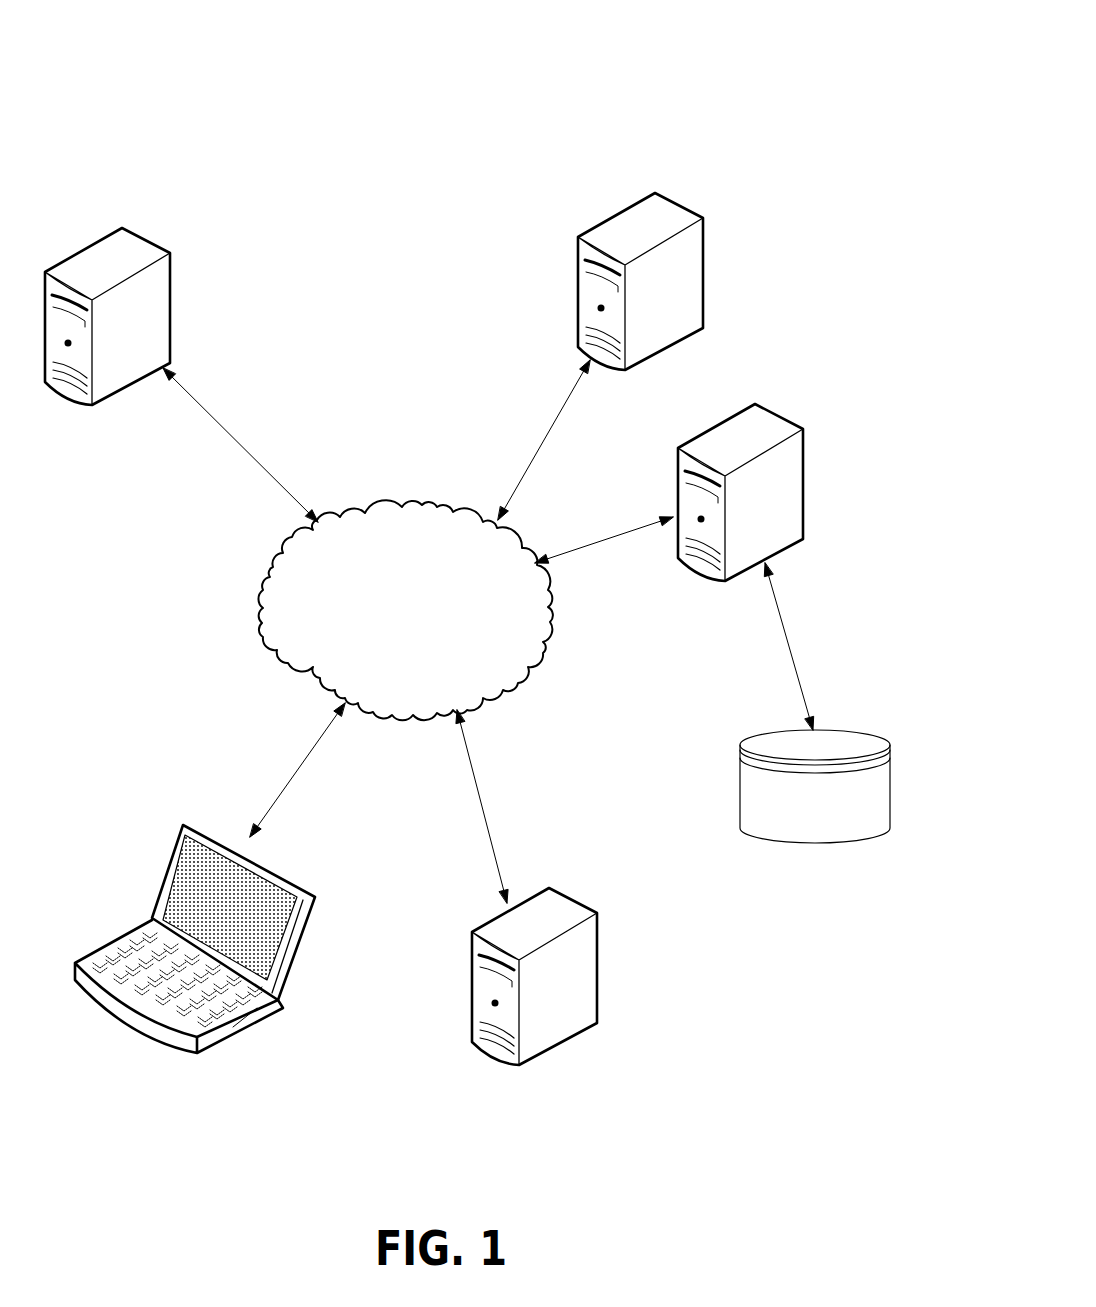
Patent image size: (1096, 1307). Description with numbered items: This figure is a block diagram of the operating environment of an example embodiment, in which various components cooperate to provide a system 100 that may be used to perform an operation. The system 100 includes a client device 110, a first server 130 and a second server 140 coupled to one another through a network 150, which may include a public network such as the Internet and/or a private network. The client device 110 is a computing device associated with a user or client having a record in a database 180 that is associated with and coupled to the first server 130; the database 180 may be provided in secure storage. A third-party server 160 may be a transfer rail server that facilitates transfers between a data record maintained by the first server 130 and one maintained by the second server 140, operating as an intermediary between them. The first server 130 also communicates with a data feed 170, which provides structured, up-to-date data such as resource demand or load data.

The system 100 is at (665, 100).
The client device 110 is at (303, 849).
The first server 130 is at (820, 418).
The second server 140 is at (187, 240).
The network 150 is at (430, 621).
The third-party server 160 is at (703, 218).
The data feed 170 is at (613, 900).
The database 180 is at (858, 737).